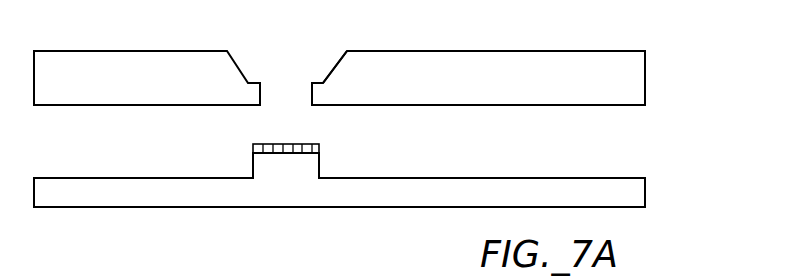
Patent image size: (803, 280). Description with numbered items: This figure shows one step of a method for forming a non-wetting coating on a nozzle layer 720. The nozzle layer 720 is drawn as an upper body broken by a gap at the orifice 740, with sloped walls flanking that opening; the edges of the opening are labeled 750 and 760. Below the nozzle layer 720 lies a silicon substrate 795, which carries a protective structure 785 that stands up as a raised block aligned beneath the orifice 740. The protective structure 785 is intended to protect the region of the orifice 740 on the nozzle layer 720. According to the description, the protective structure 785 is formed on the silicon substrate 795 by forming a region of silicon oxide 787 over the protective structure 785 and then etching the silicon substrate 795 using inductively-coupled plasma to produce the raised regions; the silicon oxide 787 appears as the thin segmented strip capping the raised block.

The nozzle layer 720 is at (645, 77).
The orifice 740 is at (308, 109).
The sloped sidewall 750 is at (332, 76).
The recess step 760 is at (335, 100).
The protective structure 785 is at (253, 158).
The region of silicon oxide 787 is at (319, 146).
The silicon substrate 795 is at (645, 189).